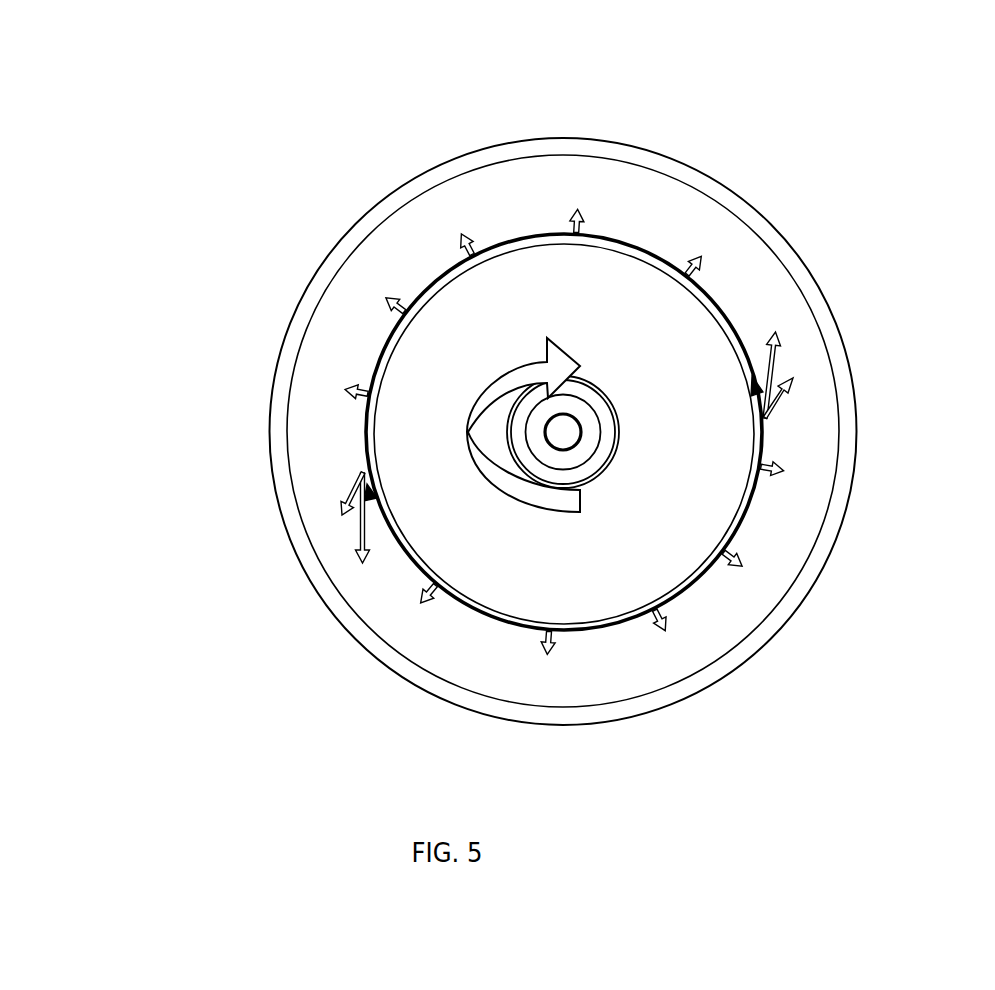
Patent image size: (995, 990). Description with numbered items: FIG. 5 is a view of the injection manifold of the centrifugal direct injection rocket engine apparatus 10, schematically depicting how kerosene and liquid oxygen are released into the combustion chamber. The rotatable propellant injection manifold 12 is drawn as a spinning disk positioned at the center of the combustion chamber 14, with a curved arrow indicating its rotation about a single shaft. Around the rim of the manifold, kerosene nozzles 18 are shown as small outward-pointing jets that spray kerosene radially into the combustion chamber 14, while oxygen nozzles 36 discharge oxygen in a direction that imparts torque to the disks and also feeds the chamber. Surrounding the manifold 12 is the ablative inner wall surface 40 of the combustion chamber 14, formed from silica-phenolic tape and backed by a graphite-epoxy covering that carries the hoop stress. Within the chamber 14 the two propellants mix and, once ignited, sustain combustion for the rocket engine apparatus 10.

The centrifugal direct injection rocket engine apparatus 10 is at (592, 60).
The rotatable propellant injection manifold 12 is at (763, 518).
The combustion chamber 14 is at (731, 626).
The kerosene nozzles 18 is at (383, 299).
The oxygen nozzles 36 is at (353, 530).
The inner wall surface of the combustion chamber 40 is at (271, 395).